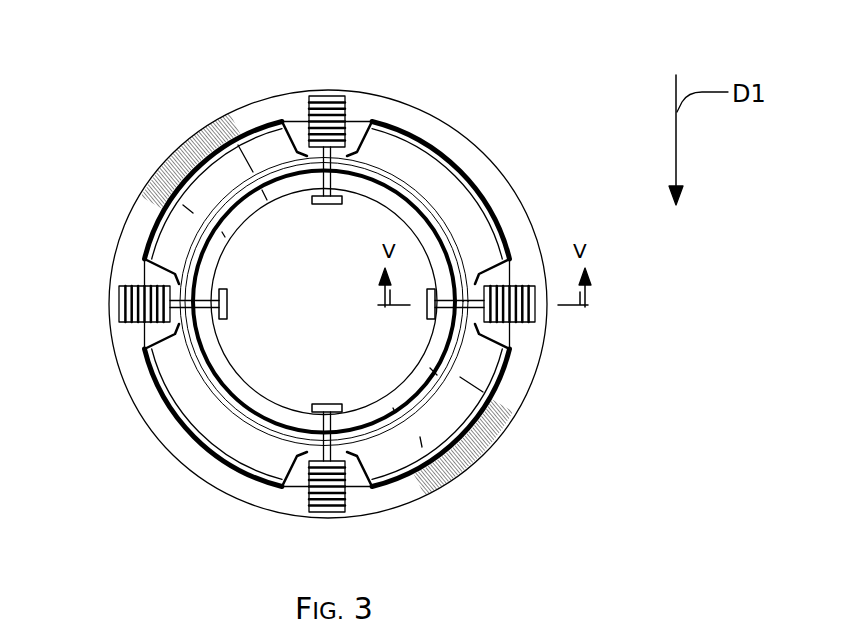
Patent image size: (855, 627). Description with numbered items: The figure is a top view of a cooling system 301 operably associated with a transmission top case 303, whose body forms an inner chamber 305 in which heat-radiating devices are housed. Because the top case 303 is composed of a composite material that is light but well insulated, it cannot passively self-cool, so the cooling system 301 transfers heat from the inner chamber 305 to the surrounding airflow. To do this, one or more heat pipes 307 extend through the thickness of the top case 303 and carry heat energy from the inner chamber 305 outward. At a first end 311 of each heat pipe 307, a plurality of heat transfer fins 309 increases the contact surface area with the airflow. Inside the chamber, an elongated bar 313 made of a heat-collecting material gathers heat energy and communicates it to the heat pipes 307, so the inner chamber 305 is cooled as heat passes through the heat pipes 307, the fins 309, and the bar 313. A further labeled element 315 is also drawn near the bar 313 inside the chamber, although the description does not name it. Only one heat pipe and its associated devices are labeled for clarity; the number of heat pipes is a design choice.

The cooling system 301 is at (146, 84).
The transmission top case 303 is at (183, 468).
The inner chamber 305 is at (368, 223).
The heat pipe 307 is at (483, 296).
The heat transfer fins 309 is at (537, 314).
The first end 311 is at (518, 345).
The elongated bar 313 is at (425, 308).
The inner support ring 315 is at (428, 354).